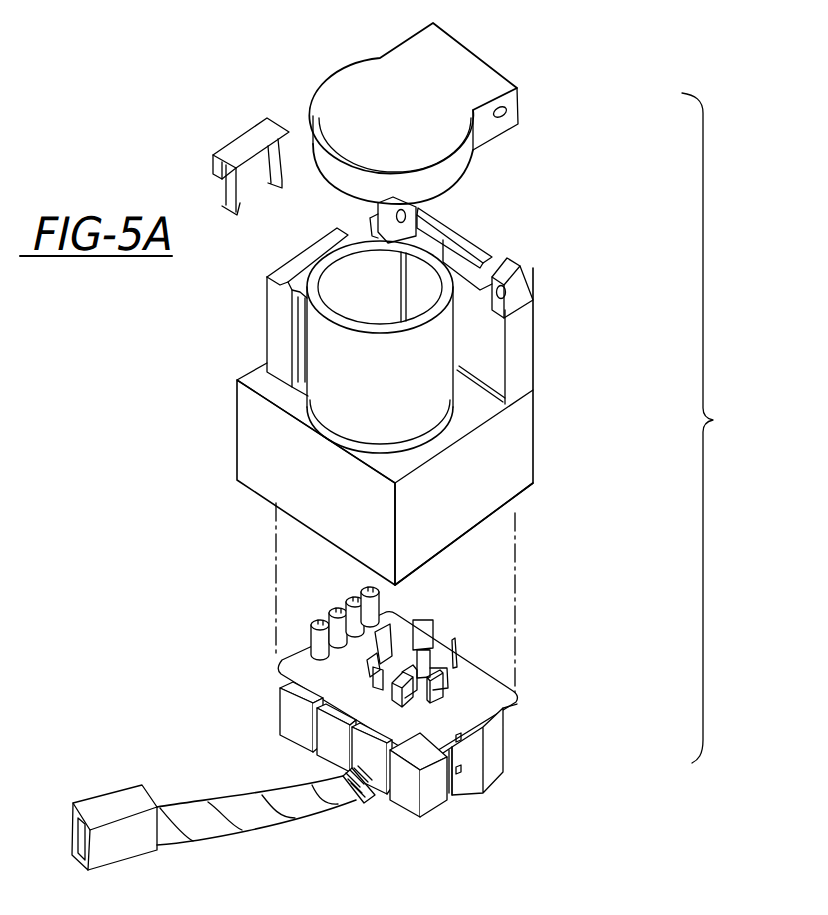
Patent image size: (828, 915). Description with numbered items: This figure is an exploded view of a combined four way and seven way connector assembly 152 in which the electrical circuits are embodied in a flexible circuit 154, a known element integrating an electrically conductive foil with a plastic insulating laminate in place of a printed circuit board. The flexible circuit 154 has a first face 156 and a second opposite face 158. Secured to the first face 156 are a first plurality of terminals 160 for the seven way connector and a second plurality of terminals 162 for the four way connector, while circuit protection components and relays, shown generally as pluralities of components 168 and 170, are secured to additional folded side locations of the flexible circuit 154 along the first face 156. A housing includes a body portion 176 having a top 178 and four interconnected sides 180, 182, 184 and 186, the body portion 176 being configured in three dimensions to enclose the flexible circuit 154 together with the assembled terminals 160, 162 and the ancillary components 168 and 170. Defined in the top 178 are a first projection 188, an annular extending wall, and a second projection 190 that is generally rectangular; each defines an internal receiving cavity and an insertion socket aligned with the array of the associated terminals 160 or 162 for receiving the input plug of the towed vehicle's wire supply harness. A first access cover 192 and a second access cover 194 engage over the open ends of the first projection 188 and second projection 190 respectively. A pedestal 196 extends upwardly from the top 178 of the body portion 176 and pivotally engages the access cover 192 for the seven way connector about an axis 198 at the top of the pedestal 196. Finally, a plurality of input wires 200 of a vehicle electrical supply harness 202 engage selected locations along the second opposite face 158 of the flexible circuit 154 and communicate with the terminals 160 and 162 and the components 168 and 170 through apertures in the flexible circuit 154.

The combined 4 way and 7 way connector assembly 152 is at (724, 428).
The flexible circuit 154 is at (380, 731).
The first face 156 is at (487, 678).
The second opposite face 158 is at (478, 778).
The first plurality of terminals 160 is at (457, 645).
The second plurality of terminals 162 is at (320, 635).
The plurality of components 168 is at (410, 812).
The plurality of components 170 is at (505, 737).
The body portion 176 is at (386, 396).
The top 178 is at (500, 388).
The side 180 is at (243, 482).
The side 182 is at (517, 473).
The side 184 is at (533, 428).
The side 186 is at (236, 392).
The first projection 188 is at (443, 345).
The second projection 190 is at (268, 317).
The first access cover 192 is at (362, 72).
The second access cover 194 is at (234, 148).
The pedestal 196 is at (520, 367).
The axis 198 is at (522, 275).
The input wires 200 is at (350, 800).
The vehicle electrical supply harness 202 is at (212, 815).